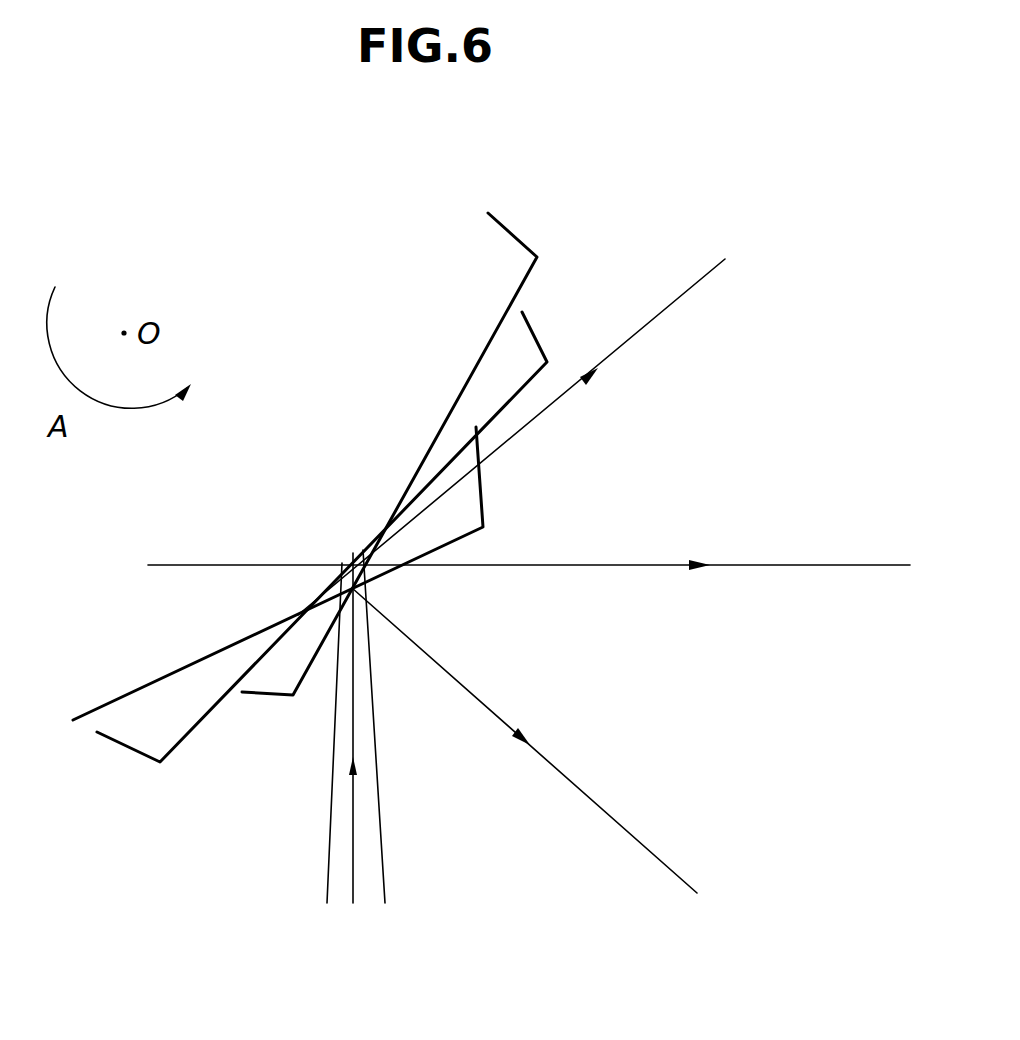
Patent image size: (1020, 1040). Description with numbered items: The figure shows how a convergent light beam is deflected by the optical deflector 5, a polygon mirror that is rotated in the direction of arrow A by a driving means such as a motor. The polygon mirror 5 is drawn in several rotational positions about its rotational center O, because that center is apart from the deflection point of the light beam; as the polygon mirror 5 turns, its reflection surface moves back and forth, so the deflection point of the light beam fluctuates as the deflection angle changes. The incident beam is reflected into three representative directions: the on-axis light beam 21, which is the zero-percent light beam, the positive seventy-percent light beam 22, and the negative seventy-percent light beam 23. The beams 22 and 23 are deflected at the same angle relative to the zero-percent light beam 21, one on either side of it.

The optical deflector 5 is at (510, 247).
The on-axis light beam 21 is at (735, 570).
The positive seventy-percent light beam 22 is at (650, 328).
The negative seventy-percent light beam 23 is at (617, 818).